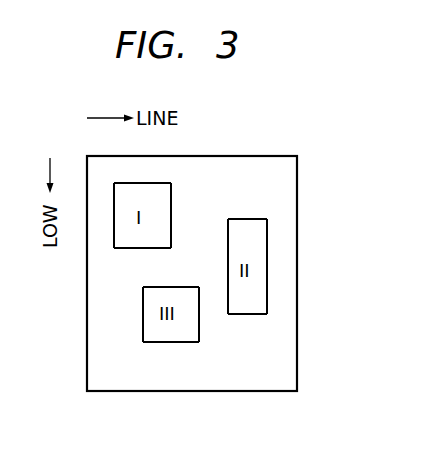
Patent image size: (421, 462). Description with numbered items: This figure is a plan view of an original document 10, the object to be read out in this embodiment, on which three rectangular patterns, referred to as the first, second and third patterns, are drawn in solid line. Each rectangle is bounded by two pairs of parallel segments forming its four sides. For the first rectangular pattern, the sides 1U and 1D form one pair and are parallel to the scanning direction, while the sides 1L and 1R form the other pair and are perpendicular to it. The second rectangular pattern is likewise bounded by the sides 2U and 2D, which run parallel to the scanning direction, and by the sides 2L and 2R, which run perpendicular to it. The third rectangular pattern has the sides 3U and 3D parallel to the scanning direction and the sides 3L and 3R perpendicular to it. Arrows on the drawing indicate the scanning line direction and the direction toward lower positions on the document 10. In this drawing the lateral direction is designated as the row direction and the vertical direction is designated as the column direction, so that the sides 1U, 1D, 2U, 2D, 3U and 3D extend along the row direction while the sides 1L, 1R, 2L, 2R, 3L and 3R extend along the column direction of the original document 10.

The original document 10 is at (237, 156).
The upper side of rectangular pattern I 1U is at (141, 183).
The right side of rectangular pattern I 1R is at (171, 203).
The left side of rectangular pattern I 1L is at (114, 228).
The lower side of rectangular pattern I 1D is at (132, 248).
The left side of rectangular pattern II 2L is at (228, 226).
The upper side of rectangular pattern II 2U is at (255, 219).
The right side of rectangular pattern II 2R is at (267, 268).
The lower side of rectangular pattern II 2D is at (252, 314).
The upper side of rectangular pattern III 3U is at (155, 287).
The left side of rectangular pattern III 3L is at (143, 320).
The lower side of rectangular pattern III 3D is at (162, 342).
The right side of rectangular pattern III 3R is at (199, 323).